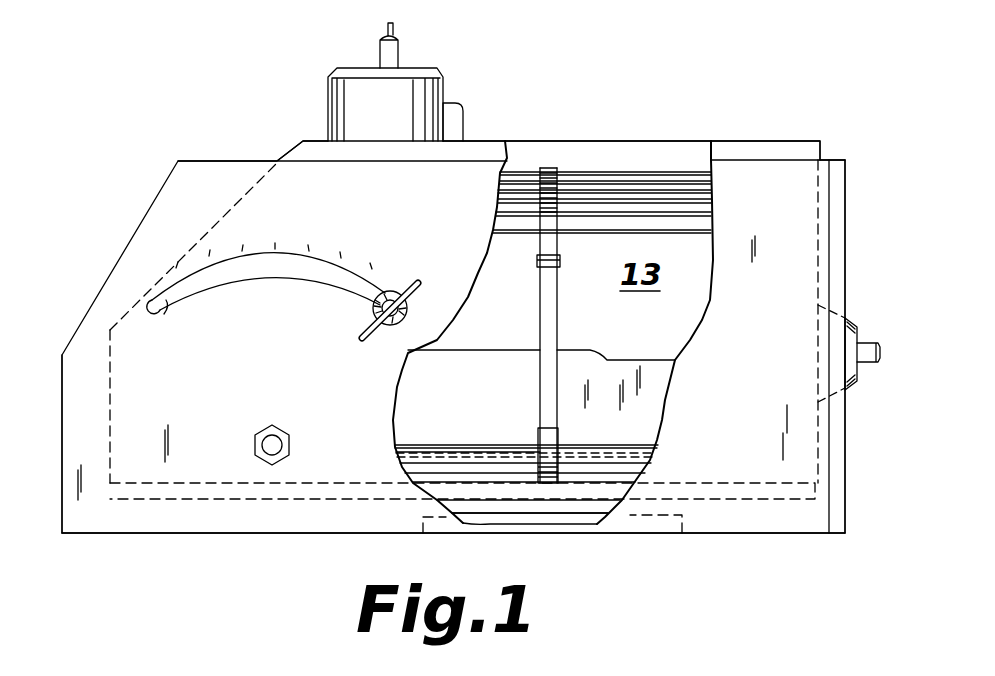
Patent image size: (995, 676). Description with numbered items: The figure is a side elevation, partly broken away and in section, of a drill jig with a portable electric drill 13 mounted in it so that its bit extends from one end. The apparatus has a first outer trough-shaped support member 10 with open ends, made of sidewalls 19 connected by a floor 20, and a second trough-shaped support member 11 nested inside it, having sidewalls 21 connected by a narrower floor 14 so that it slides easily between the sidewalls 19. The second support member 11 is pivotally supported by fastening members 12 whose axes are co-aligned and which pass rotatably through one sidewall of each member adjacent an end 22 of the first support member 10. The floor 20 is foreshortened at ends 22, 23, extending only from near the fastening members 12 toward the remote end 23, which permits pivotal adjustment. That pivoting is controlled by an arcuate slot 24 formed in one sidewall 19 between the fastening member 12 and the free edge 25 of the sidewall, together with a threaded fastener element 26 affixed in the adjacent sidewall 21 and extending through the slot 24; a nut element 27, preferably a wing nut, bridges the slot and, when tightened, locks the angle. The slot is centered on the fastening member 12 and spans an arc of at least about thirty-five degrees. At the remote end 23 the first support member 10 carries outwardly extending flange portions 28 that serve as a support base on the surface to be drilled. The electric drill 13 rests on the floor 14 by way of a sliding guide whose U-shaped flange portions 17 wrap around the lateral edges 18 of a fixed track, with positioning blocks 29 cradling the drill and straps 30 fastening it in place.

The first outer trough-shaped support member 10 is at (45, 516).
The second trough-shaped support member 11 is at (150, 268).
The fastening members 12 is at (272, 425).
The electric drill 13 is at (345, 100).
The floor 14 is at (610, 490).
The U-shaped flange portions 17 is at (498, 452).
The lateral edges 18 is at (441, 452).
The sidewalls 19 is at (192, 521).
The floor 20 is at (558, 520).
The sidewalls 21 is at (762, 143).
The end 22 is at (60, 430).
The remote end 23 is at (847, 175).
The arcuate slot 24 is at (167, 318).
The free edge 25 is at (210, 161).
The threaded fastener element 26 is at (380, 336).
The nut element 27 is at (407, 283).
The flange portions 28 is at (832, 535).
The positioning blocks 29 is at (475, 372).
The straps 30 is at (555, 208).